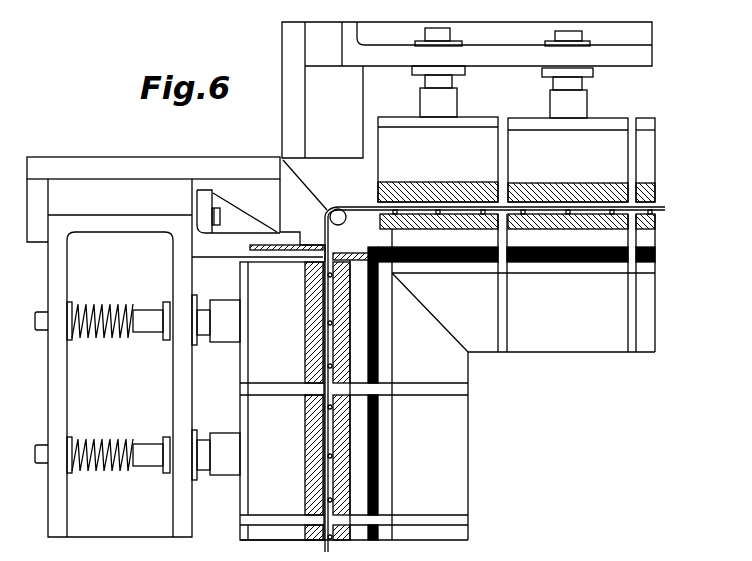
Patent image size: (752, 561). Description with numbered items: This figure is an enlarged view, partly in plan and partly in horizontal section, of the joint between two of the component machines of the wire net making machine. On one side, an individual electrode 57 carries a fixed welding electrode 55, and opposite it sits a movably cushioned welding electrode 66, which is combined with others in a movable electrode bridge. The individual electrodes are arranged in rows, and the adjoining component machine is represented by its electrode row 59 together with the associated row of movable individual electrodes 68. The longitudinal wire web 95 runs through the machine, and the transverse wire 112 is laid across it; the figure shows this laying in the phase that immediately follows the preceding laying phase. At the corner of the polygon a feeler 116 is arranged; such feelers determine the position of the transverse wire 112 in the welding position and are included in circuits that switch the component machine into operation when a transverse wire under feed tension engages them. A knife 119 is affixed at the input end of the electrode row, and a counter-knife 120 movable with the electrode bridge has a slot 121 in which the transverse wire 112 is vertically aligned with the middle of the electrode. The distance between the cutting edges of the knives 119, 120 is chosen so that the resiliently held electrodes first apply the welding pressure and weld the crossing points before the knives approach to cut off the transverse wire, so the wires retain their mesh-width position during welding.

The fixed welding electrode 55 is at (340, 540).
The individual electrode 57 is at (457, 418).
The electrode row 59 is at (640, 335).
The movably cushioned welding electrode 66 is at (265, 415).
The movable individual electrode row 68 is at (645, 165).
The longitudinal wire web 95 is at (612, 214).
The transverse wire 112 is at (665, 208).
The feeler 116 is at (330, 215).
The knife 119 is at (360, 253).
The counter-knife 120 is at (258, 245).
The slot 121 is at (340, 246).